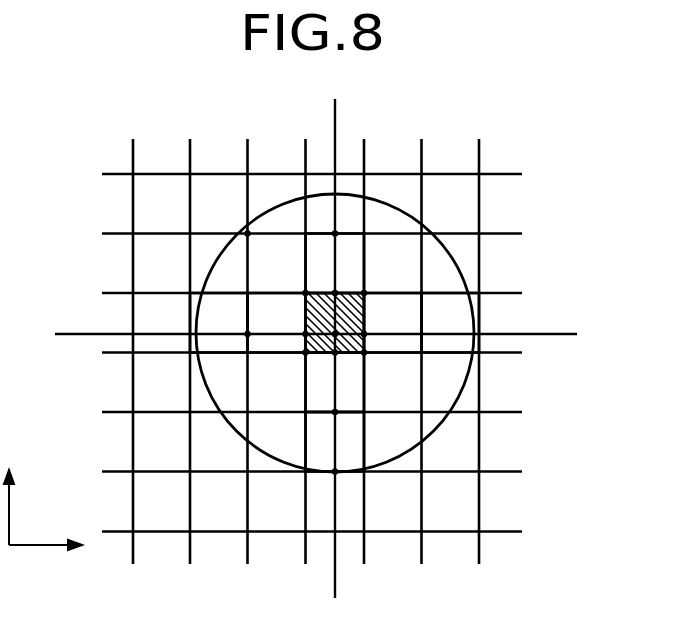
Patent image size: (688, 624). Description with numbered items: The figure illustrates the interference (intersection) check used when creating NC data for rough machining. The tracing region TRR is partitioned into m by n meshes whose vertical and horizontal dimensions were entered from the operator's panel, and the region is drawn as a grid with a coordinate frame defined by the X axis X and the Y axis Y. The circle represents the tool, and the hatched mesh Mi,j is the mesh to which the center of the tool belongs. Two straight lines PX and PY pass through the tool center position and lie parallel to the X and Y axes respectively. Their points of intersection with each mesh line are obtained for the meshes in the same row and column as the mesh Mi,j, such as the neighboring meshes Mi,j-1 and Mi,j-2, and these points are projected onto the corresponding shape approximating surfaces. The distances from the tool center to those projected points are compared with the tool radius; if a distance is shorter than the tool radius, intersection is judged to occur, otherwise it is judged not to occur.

The tracing region TRR is at (104, 392).
The straight line parallel to the Y axis PY is at (335, 121).
The straight line parallel to the X axis PX is at (70, 333).
The mesh Mi,j is at (364, 323).
The mesh Mi,j-1 is at (290, 308).
The mesh Mi,j-2 is at (231, 323).
The X axis X is at (54, 548).
The Y axis Y is at (8, 493).